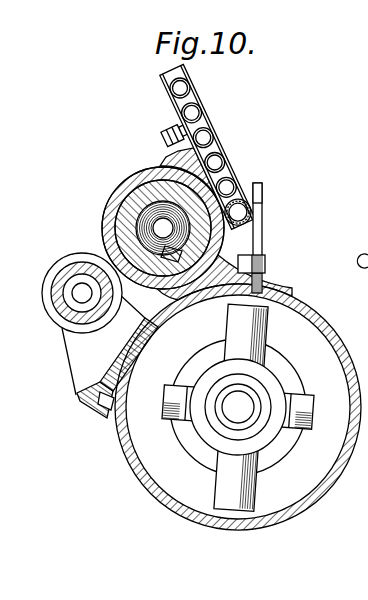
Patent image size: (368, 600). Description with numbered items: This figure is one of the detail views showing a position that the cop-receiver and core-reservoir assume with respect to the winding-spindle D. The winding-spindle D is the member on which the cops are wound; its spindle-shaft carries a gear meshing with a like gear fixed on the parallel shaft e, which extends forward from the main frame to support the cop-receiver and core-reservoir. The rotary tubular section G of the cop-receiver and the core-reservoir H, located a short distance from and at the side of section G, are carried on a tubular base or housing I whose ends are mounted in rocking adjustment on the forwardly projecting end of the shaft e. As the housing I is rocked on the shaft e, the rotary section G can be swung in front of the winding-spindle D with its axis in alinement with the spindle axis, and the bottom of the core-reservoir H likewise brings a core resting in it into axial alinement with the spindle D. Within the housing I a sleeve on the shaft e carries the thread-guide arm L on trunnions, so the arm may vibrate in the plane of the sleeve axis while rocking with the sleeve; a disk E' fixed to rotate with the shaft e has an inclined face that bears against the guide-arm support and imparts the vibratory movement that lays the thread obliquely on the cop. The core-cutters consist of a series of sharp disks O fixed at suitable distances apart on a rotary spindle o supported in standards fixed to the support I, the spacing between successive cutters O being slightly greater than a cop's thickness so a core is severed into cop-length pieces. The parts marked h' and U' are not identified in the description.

The core-reservoir H is at (205, 108).
The clamp bolt h' is at (210, 140).
The winding-spindle D is at (247, 253).
The upper end of rod U' is at (285, 191).
The rotary tubular section of cop-receiver G is at (200, 240).
The thread-guide arm L is at (265, 278).
The core-cutters O is at (45, 280).
The rotary spindle o is at (78, 297).
The tubular base or housing I is at (300, 521).
The disk E' is at (233, 407).
The shaft e is at (248, 403).